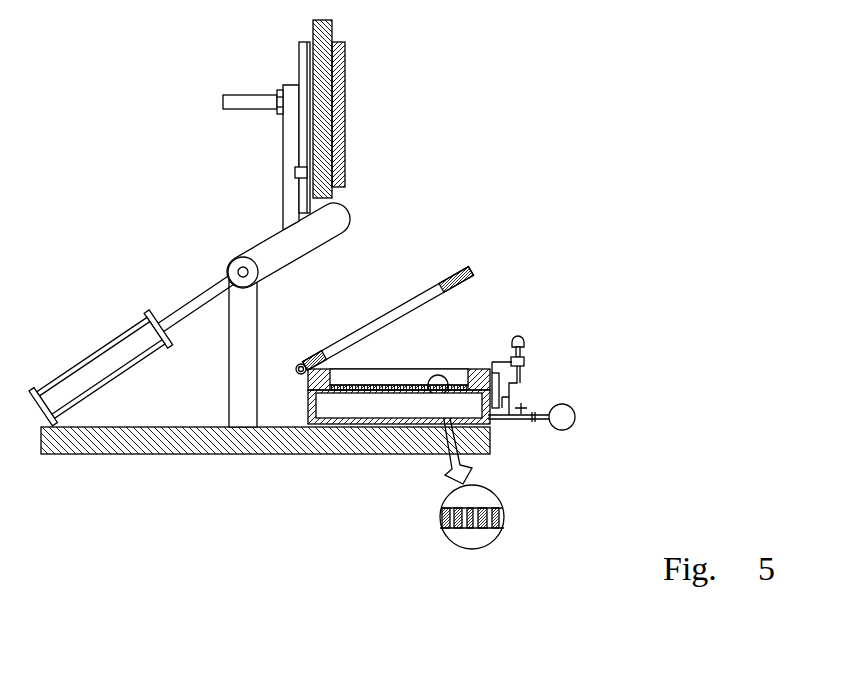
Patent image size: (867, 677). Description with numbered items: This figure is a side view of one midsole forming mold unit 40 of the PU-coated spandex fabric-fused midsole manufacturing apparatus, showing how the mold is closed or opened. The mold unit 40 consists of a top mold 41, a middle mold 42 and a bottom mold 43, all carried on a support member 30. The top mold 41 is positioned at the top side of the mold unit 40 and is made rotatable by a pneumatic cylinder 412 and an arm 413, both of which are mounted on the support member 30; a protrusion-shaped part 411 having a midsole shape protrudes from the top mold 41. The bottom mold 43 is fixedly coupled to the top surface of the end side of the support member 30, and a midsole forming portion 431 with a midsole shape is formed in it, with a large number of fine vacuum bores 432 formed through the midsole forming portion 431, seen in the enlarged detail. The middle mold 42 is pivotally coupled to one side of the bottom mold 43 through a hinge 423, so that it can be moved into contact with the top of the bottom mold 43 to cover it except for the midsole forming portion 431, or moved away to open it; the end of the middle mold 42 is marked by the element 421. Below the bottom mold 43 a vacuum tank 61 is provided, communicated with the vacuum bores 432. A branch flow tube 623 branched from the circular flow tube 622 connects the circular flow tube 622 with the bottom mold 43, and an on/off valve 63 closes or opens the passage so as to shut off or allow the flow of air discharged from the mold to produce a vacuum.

The support member 30 is at (333, 445).
The midsole forming mold unit 40 is at (232, 223).
The top mold 41 is at (328, 74).
The protrusion-shaped part 411 is at (341, 120).
The pneumatic cylinder 412 is at (128, 348).
The arm 413 is at (330, 222).
The middle mold 42 is at (421, 284).
The pressing rod end 421 is at (403, 310).
The hinge 423 is at (299, 364).
The bottom mold 43 is at (413, 430).
The midsole forming portion 431 is at (403, 372).
The vacuum bore 432 is at (481, 530).
The vacuum tank 61 is at (322, 418).
The on/off valve 63 is at (522, 408).
The circular flow tube 622 is at (571, 407).
The branch flow tube 623 is at (508, 423).